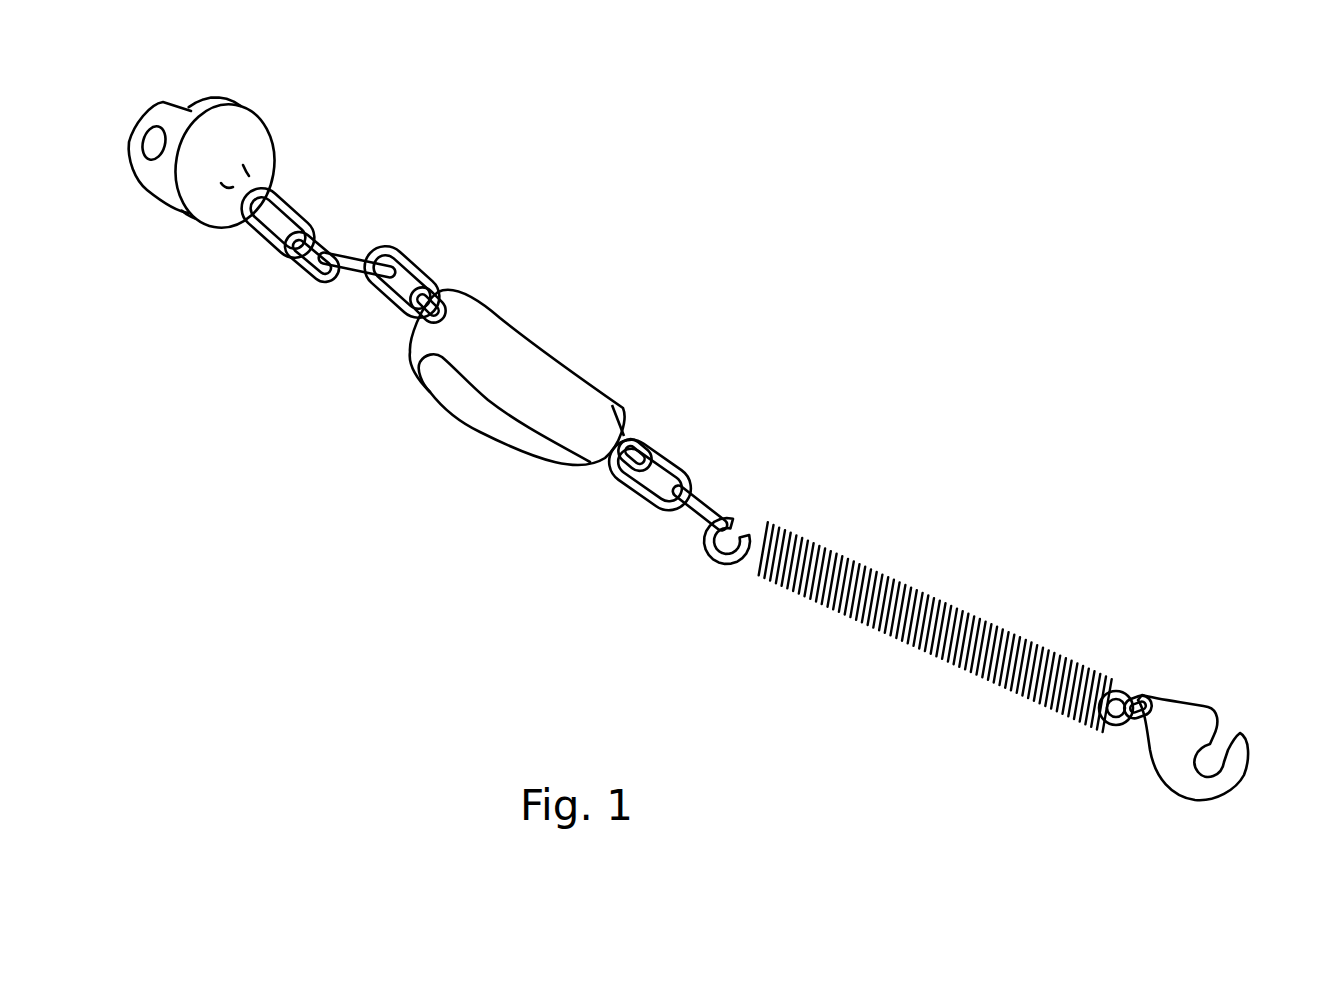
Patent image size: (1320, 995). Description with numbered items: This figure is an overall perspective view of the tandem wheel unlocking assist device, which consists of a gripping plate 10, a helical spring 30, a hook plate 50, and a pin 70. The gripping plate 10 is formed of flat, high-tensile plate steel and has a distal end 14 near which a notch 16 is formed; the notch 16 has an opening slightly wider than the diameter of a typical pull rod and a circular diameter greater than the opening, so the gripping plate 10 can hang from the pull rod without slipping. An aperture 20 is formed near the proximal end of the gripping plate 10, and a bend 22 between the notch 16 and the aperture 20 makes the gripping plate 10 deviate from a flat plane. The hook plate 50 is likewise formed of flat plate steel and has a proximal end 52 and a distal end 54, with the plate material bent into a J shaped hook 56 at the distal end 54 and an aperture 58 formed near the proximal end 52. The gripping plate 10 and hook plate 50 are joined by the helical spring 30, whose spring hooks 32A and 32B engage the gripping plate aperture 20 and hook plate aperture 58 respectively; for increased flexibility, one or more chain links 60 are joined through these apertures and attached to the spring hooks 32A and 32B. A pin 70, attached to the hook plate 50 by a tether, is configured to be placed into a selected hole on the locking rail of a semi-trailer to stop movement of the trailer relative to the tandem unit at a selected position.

The gripping plate 10 is at (1190, 651).
The distal end 14 is at (1244, 782).
The notch 16 is at (1213, 746).
The aperture 20 is at (1150, 757).
The bend 22 is at (1167, 778).
The helical spring 30 is at (1000, 575).
The spring hook 32A is at (1118, 727).
The spring hook 32B is at (720, 576).
The hook plate 50 is at (584, 302).
The proximal end 52 is at (610, 437).
The distal end 54 is at (448, 320).
The J shaped hook 56 is at (430, 395).
The aperture 58 is at (623, 478).
The chain links 60 is at (690, 508).
The pin 70 is at (233, 94).